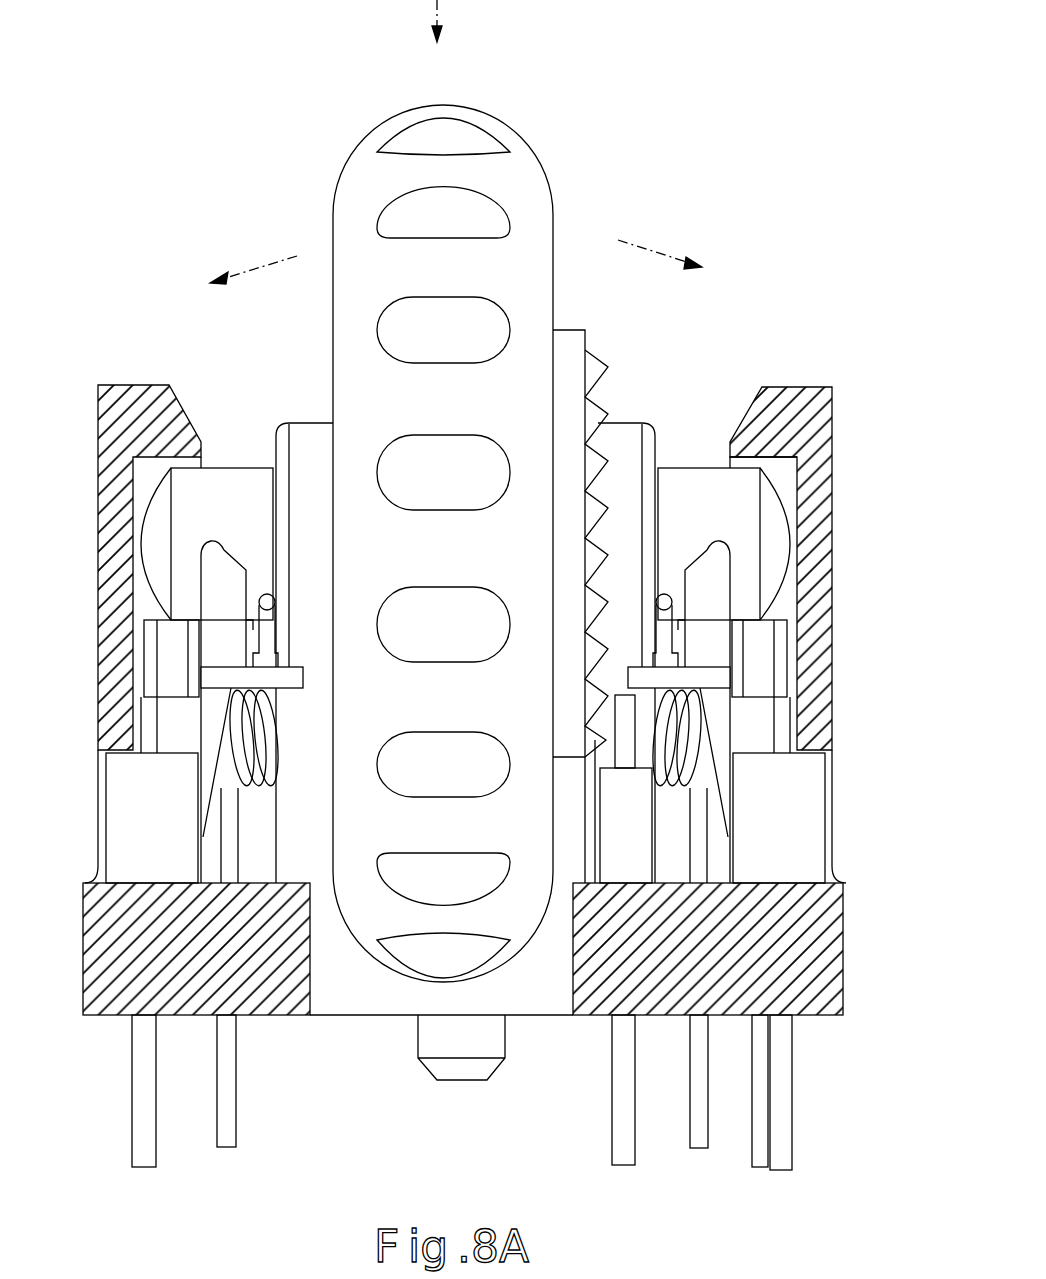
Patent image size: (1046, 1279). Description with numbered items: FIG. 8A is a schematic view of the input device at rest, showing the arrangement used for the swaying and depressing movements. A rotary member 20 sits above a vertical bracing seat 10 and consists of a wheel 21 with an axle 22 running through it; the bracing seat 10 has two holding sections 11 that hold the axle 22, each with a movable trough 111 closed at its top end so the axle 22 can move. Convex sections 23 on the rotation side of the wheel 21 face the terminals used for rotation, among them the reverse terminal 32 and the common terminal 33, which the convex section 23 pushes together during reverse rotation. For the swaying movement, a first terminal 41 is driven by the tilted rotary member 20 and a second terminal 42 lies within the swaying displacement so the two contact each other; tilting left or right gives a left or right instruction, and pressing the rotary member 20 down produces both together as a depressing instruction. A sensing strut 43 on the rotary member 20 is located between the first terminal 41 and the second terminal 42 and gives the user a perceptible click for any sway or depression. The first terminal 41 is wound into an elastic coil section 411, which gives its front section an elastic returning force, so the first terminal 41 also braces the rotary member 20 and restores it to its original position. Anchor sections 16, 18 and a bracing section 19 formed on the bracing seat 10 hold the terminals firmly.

The bracing seat 10 is at (797, 957).
The holding section 11 is at (785, 420).
The movable trough 111 is at (787, 462).
The anchor section 16 is at (765, 845).
The anchor section 18 is at (607, 842).
The bracing section 19 is at (762, 658).
The rotary member 20 is at (542, 162).
The wheel 21 is at (530, 232).
The axle 22 is at (708, 492).
The convex section 23 is at (596, 404).
The reverse terminal 32 is at (627, 728).
The common terminal 33 is at (590, 800).
The first terminal 41 is at (664, 626).
The coil section 411 is at (676, 738).
The second terminal 42 is at (695, 681).
The sensing strut 43 is at (705, 578).